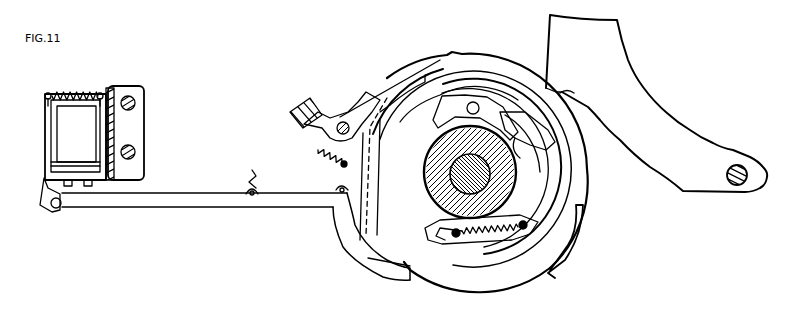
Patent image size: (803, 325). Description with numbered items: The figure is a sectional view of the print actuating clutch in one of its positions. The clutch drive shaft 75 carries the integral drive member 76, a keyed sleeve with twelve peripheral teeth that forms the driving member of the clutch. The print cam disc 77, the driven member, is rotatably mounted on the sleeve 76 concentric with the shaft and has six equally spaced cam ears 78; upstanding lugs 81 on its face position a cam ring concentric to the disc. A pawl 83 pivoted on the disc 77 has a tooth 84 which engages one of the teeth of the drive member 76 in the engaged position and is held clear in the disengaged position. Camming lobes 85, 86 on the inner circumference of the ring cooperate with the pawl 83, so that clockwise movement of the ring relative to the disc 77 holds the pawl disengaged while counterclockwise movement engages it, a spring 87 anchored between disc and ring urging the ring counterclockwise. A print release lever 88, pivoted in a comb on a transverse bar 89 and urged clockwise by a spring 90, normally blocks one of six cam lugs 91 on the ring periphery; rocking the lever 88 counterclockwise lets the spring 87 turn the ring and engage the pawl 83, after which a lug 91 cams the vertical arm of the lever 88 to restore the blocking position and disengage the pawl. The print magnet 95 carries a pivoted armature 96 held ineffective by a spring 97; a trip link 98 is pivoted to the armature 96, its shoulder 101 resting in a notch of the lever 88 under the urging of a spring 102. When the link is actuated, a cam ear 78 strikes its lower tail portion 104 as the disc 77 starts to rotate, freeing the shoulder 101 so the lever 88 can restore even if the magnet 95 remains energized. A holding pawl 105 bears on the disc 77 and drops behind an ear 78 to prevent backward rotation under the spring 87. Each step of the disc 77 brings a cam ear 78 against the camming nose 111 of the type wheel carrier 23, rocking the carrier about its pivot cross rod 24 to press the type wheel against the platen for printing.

The type wheel carrier 23 is at (632, 72).
The cross rod 24 is at (737, 186).
The clutch drive shaft 75 is at (455, 160).
The integral drive member 76 is at (437, 191).
The print cam disc 77 is at (585, 189).
The cam ear 78 is at (578, 89).
The upstanding lug 81 is at (582, 175).
The pawl 83 is at (487, 108).
The tooth 84 is at (520, 140).
The camming lobe 85 is at (393, 127).
The camming lobe 86 is at (572, 114).
The spring 87 is at (500, 230).
The print release lever 88 is at (357, 112).
The transverse bar 89 is at (304, 102).
The spring 90 is at (316, 150).
The cam lug 91 is at (502, 92).
The print magnet 95 is at (64, 140).
The armature 96 is at (46, 194).
The spring 97 is at (74, 92).
The trip link 98 is at (191, 196).
The shoulder 101 is at (336, 188).
The spring 102 is at (248, 172).
The lower tail portion 104 is at (400, 270).
The holding pawl 105 is at (583, 252).
The camming nose 111 is at (549, 88).